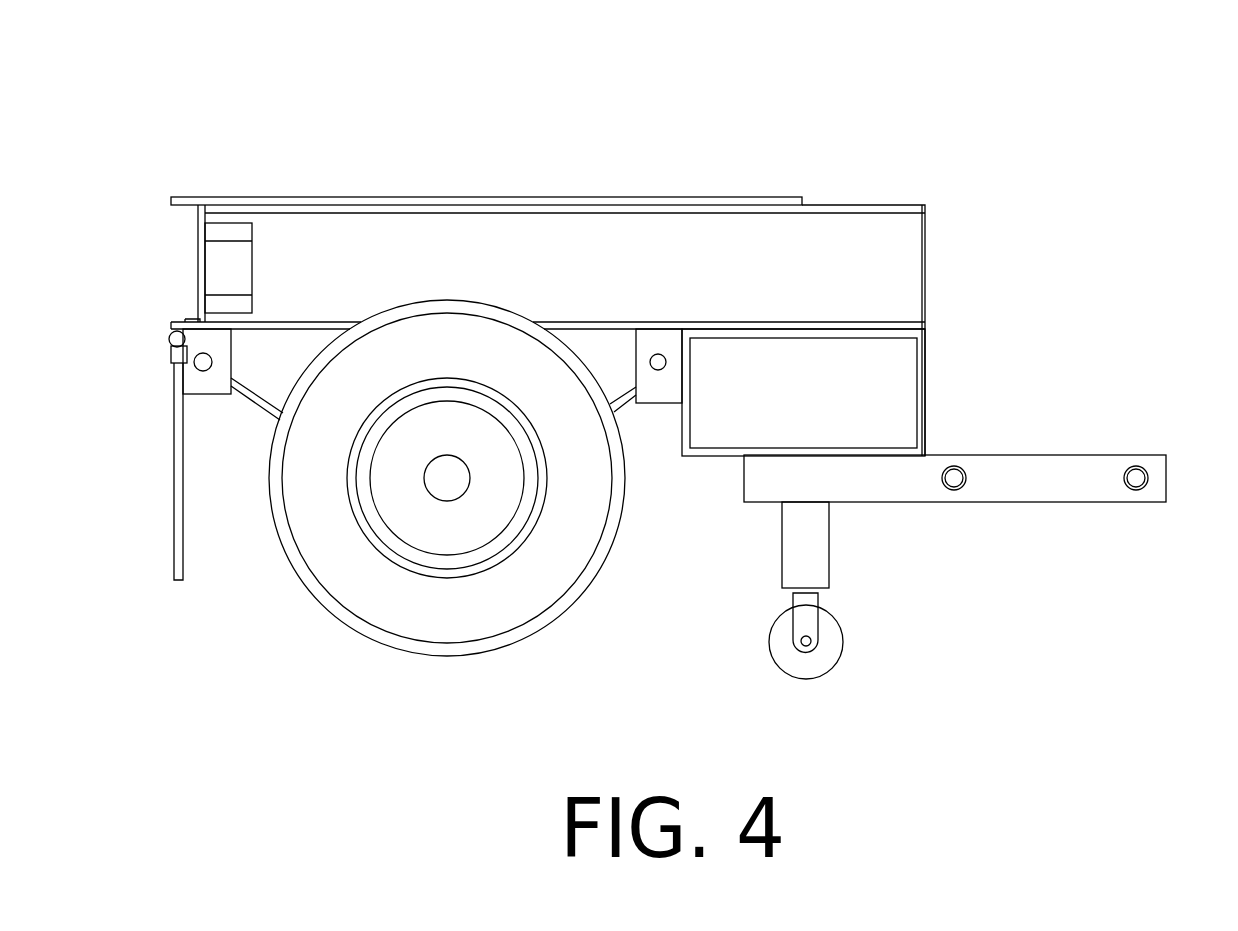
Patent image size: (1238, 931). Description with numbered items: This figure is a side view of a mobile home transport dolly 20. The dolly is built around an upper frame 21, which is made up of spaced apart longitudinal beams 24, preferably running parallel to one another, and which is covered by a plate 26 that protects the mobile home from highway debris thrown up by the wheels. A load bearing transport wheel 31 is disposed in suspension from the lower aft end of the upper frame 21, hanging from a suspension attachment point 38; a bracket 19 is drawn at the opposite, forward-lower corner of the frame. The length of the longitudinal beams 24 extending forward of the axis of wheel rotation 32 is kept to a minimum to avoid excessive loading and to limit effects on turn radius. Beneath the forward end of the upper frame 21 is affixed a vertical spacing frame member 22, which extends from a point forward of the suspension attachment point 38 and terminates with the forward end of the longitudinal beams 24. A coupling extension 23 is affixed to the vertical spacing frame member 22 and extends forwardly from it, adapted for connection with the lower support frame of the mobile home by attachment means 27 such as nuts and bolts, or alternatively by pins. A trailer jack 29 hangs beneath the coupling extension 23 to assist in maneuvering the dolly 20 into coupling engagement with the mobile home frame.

The frame bracket 19 is at (313, 523).
The mobile home transport dolly 20 is at (945, 151).
The upper frame 21 is at (935, 262).
The vertical spacing frame member 22 is at (900, 392).
The coupling extension 23 is at (1029, 478).
The longitudinal beam 24 is at (773, 240).
The plate 26 is at (257, 197).
The attachment means 27 is at (1134, 481).
The trailer jack 29 is at (818, 526).
The load bearing transport wheel 31 is at (365, 593).
The axis of wheel rotation 32 is at (448, 478).
The suspension attachment point 38 is at (652, 385).